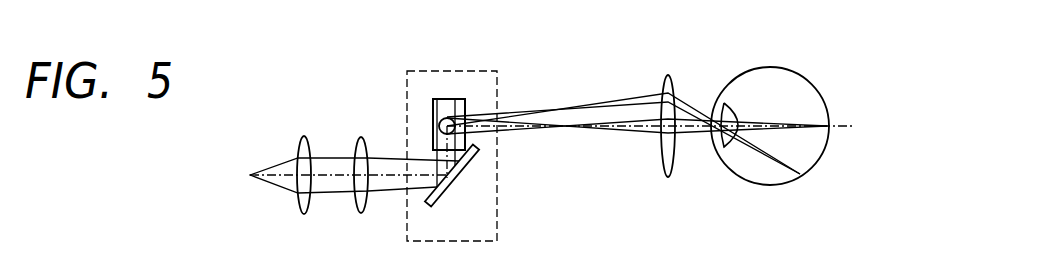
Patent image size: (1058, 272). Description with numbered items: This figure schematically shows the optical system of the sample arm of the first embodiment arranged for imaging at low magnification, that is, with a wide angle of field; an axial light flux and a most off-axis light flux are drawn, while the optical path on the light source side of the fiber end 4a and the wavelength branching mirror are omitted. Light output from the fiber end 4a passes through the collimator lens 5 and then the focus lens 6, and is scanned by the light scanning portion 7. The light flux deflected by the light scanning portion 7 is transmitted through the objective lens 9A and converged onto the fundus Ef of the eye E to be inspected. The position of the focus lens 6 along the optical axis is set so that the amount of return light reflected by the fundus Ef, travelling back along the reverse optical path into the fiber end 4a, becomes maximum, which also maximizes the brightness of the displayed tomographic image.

The fiber end 4a is at (250, 175).
The collimator lens 5 is at (305, 135).
The focus lens 6 is at (363, 137).
The light scanning portion 7 is at (432, 70).
The objective lens 9A is at (668, 74).
The eye to be inspected E is at (748, 67).
The fundus Ef is at (828, 125).